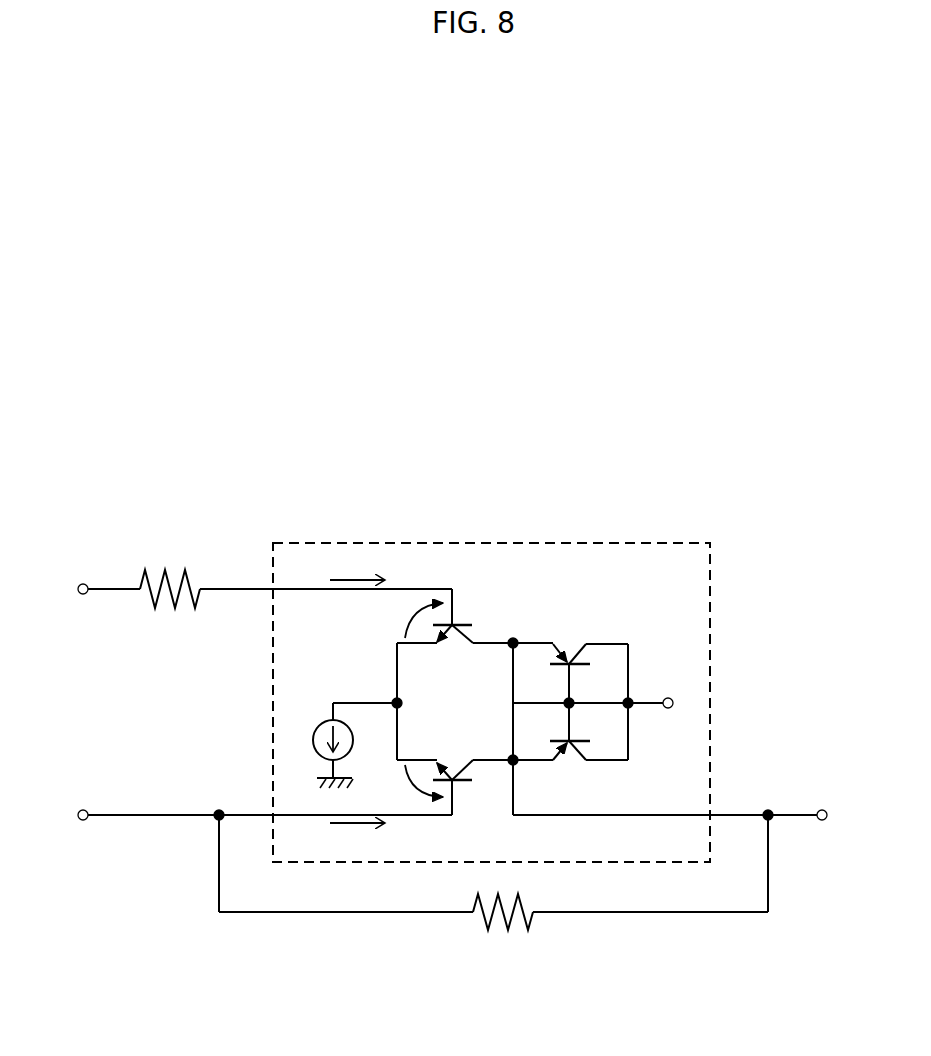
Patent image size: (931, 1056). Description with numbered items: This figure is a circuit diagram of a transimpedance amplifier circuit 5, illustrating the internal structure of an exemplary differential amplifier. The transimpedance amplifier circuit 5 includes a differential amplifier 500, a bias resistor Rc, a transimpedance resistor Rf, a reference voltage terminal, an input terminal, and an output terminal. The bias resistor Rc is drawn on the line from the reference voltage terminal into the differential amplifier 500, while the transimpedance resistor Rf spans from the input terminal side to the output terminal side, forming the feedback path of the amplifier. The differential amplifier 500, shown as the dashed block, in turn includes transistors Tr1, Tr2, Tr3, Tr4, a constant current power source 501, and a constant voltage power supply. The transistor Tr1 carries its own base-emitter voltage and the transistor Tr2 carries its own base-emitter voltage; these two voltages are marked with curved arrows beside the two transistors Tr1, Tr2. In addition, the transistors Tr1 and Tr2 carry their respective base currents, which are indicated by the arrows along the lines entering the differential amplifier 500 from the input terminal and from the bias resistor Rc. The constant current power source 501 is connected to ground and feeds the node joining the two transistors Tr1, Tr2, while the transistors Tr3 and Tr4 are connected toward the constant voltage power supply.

The transimpedance amplifier circuit 5 is at (490, 388).
The differential amplifier 500 is at (710, 543).
The constant current power source 501 is at (328, 722).
The transistor Tr1 is at (453, 772).
The transistor Tr2 is at (453, 635).
The transistor Tr3 is at (570, 750).
The transistor Tr4 is at (570, 658).
The bias resistor Rc is at (170, 575).
The transimpedance resistor Rf is at (503, 930).